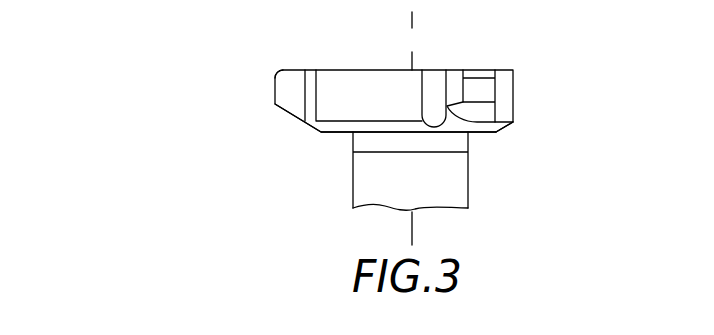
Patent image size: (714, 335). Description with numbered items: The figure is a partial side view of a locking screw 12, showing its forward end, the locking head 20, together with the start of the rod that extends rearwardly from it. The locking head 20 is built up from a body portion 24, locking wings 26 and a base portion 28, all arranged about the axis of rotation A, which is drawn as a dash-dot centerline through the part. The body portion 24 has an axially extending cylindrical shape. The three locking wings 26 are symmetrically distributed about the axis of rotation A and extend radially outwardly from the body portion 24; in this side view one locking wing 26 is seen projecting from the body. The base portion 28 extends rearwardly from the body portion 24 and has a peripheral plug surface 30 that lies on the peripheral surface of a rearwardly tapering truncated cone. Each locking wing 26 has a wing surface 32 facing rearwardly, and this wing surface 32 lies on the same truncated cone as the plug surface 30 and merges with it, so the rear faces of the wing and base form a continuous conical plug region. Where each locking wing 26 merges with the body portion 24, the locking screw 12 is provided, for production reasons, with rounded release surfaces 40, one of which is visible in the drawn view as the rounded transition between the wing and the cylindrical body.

The locking screw 12 is at (124, 56).
The locking head 20 is at (249, 88).
The body portion 24 is at (515, 94).
The locking wing 26 is at (260, 61).
The base portion 28 is at (519, 129).
The plug surface 30 is at (378, 127).
The wing surface 32 is at (468, 105).
The release surface 40 is at (433, 83).
The axis of rotation A is at (411, 42).